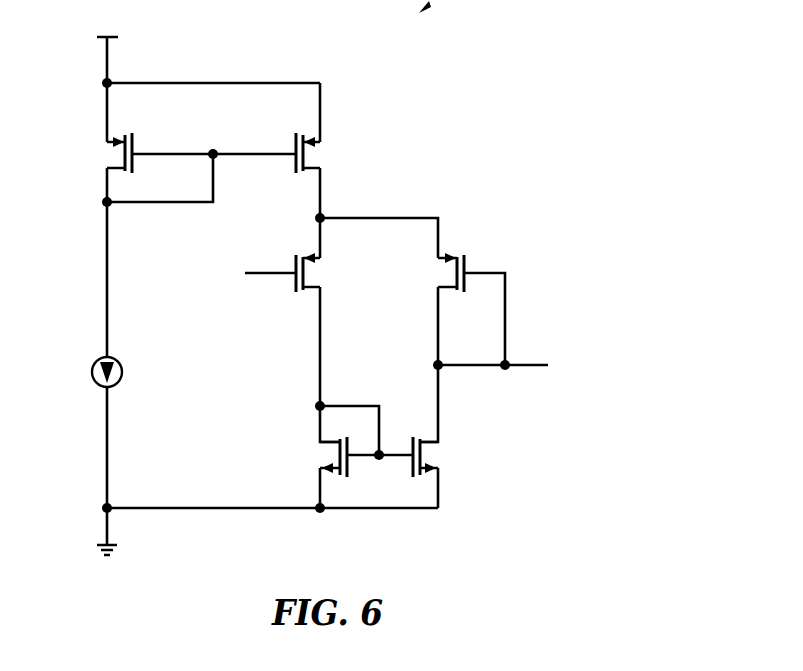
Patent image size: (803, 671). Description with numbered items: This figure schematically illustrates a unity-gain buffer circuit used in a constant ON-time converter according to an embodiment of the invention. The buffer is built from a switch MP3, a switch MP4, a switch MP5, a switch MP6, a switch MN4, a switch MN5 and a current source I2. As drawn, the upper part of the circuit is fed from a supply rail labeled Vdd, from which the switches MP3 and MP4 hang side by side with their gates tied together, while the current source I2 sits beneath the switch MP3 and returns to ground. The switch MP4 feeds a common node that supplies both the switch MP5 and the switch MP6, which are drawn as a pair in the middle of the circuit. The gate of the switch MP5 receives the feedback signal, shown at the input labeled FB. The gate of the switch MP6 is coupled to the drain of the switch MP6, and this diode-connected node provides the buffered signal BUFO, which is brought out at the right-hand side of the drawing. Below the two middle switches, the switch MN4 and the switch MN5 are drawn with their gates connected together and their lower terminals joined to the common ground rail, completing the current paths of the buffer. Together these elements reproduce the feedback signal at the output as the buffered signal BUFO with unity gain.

The supply voltage node Vdd is at (203, 49).
The switch MP3 is at (88, 145).
The switch MP4 is at (238, 153).
The switch MP5 is at (367, 330).
The switch MP6 is at (448, 347).
The feedback input node FB is at (250, 273).
The buffered signal BUFO is at (524, 365).
The switch MN4 is at (337, 457).
The switch MN5 is at (454, 472).
The current source I2 is at (122, 355).